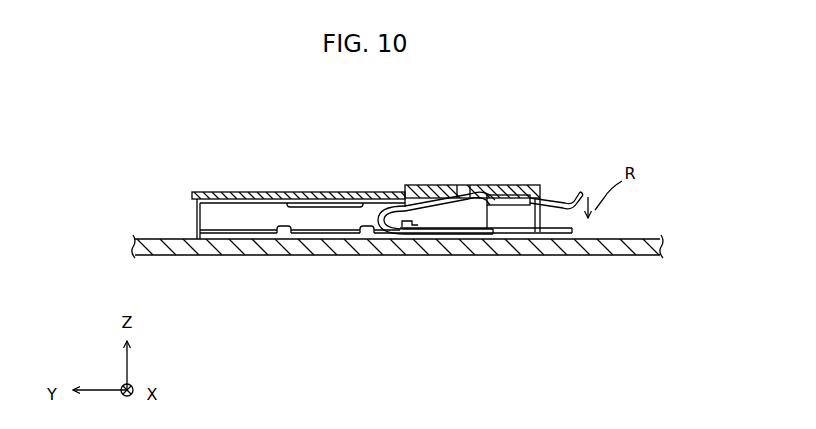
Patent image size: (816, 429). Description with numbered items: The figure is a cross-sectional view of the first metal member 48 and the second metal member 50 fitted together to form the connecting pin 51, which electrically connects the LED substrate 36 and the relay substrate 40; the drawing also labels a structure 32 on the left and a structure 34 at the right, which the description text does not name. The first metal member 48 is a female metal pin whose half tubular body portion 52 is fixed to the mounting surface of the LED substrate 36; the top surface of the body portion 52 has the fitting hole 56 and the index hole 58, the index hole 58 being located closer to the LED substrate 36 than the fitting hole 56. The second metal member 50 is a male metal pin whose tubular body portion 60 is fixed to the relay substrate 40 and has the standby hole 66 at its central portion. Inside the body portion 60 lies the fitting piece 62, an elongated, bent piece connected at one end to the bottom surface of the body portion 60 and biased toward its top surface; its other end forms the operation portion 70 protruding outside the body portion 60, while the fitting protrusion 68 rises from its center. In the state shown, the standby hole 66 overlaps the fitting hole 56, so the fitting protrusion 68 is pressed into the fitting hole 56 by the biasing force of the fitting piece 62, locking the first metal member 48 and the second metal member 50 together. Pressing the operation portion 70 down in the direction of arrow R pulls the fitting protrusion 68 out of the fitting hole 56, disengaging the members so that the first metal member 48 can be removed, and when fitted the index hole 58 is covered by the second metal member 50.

The circuit board assembly 32 is at (153, 232).
The substrate 34 is at (641, 236).
The LED substrate 36 is at (177, 250).
The relay substrate 40 is at (617, 248).
The first metal member 48 is at (272, 183).
The second metal member 50 is at (440, 183).
The connecting pin 51 is at (355, 178).
The body portion 52 is at (318, 191).
The fitting hole 56 is at (476, 189).
The index hole 58 is at (415, 189).
The body portion 60 is at (527, 191).
The fitting piece 62 is at (417, 242).
The standby hole 66 is at (490, 191).
The fitting protrusion 68 is at (482, 189).
The operation portion 70 is at (557, 194).